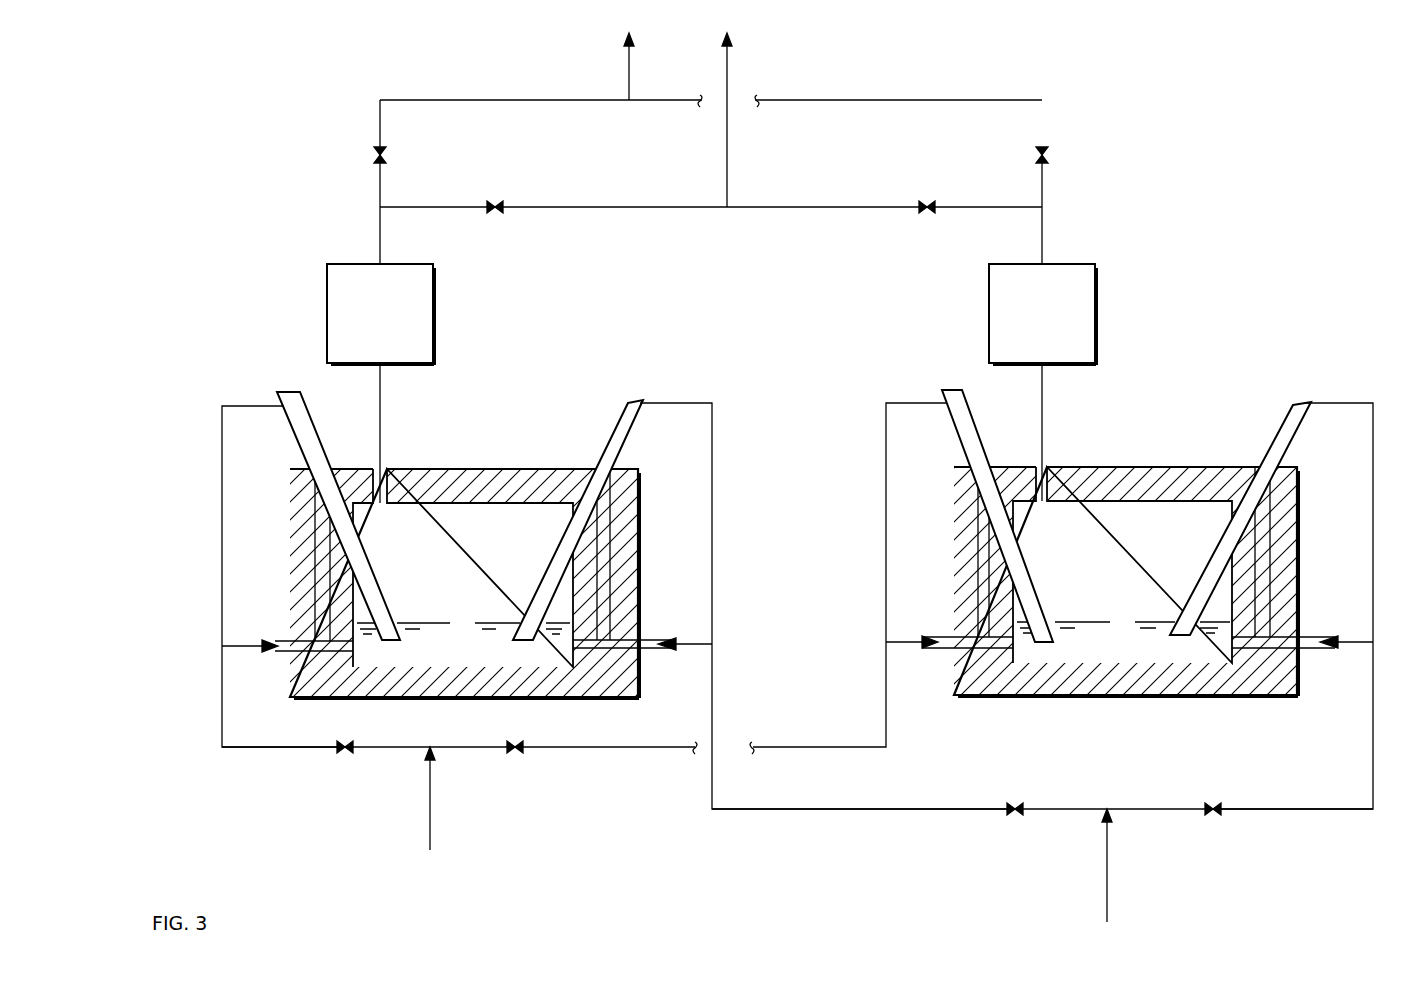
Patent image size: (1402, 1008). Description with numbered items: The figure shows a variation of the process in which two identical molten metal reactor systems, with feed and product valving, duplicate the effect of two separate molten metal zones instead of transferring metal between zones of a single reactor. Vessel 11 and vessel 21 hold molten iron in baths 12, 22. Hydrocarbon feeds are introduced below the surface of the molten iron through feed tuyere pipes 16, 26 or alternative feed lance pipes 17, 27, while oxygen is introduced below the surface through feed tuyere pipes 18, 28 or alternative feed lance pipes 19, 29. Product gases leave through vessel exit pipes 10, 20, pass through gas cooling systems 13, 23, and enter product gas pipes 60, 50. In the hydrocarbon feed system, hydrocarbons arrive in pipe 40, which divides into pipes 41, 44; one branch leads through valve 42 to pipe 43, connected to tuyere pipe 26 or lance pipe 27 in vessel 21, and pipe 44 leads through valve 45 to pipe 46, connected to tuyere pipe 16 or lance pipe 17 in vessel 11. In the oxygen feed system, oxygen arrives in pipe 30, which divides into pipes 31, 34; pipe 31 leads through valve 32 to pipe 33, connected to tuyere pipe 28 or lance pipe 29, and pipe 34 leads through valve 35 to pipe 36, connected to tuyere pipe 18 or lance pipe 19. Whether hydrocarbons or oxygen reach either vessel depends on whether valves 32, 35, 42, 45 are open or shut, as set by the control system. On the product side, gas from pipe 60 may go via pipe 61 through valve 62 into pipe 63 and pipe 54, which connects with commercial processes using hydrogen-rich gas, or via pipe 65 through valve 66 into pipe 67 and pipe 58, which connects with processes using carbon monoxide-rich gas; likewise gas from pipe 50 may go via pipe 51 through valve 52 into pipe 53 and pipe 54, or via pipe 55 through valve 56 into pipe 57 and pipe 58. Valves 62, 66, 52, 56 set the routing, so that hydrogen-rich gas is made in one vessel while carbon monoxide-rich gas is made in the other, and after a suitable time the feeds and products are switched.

The vessel exit pipe 10 is at (382, 404).
The vessel 11 is at (495, 690).
The molten iron bath 12 is at (412, 620).
The gas cooling system 13 is at (380, 314).
The feed tuyere pipe 16 is at (282, 658).
The feed lance pipe 17 is at (290, 404).
The feed tuyere pipe 18 is at (648, 652).
The feed lance pipe 19 is at (634, 408).
The vessel exit pipe 20 is at (1044, 402).
The vessel 21 is at (1150, 688).
The molten iron bath 22 is at (1072, 618).
The gas cooling system 23 is at (1042, 314).
The feed tuyere pipe 26 is at (944, 653).
The feed lance pipe 27 is at (955, 400).
The feed tuyere pipe 28 is at (1308, 654).
The feed lance pipe 29 is at (1296, 410).
The oxygen feed pipe 30 is at (1109, 888).
The oxygen pipe 31 is at (1160, 808).
The valve 32 is at (1210, 813).
The oxygen pipe 33 is at (1302, 812).
The oxygen pipe 34 is at (1068, 809).
The valve 35 is at (1009, 811).
The oxygen pipe 36 is at (945, 812).
The hydrocarbon feed pipe 40 is at (432, 792).
The hydrocarbon pipe 41 is at (450, 747).
The valve 42 is at (517, 748).
The hydrocarbon pipe 43 is at (603, 750).
The hydrocarbon pipe 44 is at (371, 745).
The valve 45 is at (341, 750).
The hydrocarbon pipe 46 is at (302, 750).
The product gas pipe 50 is at (1043, 230).
The product gas pipe 51 is at (1044, 185).
The valve 52 is at (1044, 156).
The product gas pipe 53 is at (946, 98).
The hydrogen-rich gas pipe 54 is at (626, 75).
The product gas pipe 55 is at (1016, 201).
The valve 56 is at (930, 202).
The product gas pipe 57 is at (786, 209).
The carbon monoxide-rich gas pipe 58 is at (728, 140).
The product gas pipe 60 is at (382, 237).
The product gas pipe 61 is at (378, 189).
The valve 62 is at (372, 152).
The product gas pipe 63 is at (517, 98).
The product gas pipe 65 is at (456, 203).
The valve 66 is at (502, 205).
The product gas pipe 67 is at (622, 210).